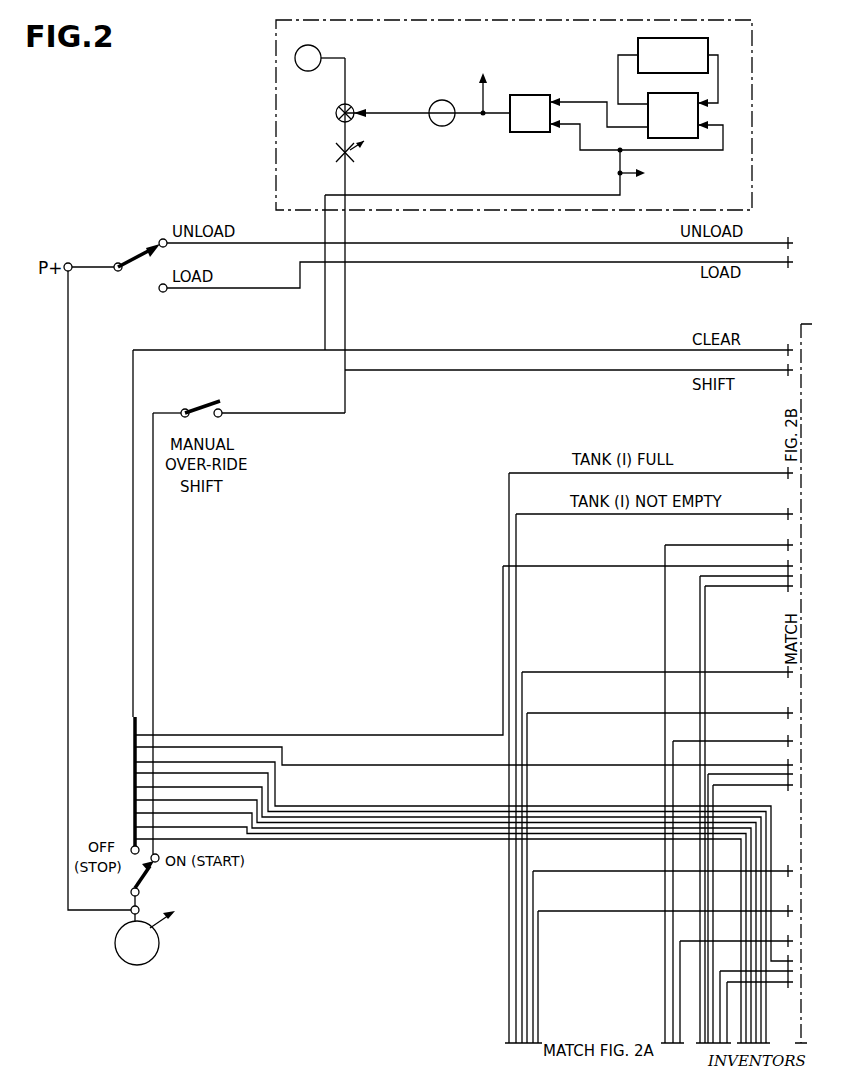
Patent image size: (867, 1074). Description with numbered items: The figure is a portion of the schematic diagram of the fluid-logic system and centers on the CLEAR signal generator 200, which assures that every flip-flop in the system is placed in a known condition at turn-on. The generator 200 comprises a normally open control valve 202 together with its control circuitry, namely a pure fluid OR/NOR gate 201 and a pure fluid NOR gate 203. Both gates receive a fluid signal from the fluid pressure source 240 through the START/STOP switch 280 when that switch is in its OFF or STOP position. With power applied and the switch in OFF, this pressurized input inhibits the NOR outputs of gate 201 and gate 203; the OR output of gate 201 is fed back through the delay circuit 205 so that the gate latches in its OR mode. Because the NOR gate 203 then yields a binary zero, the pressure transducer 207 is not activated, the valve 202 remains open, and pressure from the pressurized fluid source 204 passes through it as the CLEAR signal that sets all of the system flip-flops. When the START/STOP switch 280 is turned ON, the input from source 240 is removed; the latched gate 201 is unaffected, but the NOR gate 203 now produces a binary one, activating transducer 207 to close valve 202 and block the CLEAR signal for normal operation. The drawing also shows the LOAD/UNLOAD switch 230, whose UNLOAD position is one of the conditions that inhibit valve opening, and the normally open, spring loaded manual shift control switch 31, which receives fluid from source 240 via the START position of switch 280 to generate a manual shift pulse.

The CLEAR signal generator 200 is at (275, 137).
The OR/NOR gate 201 is at (706, 108).
The normally open control valve 202 is at (334, 114).
The NOR gate 203 is at (538, 95).
The pressurized fluid source 204 is at (322, 48).
The delay circuit 205 is at (708, 44).
The pressure transducer 207 is at (449, 126).
The LOAD/UNLOAD switch 230 is at (150, 252).
The manual shift control switch 31 is at (206, 402).
The START/STOP switch 280 is at (145, 880).
The fluid pressure source 240 is at (124, 956).